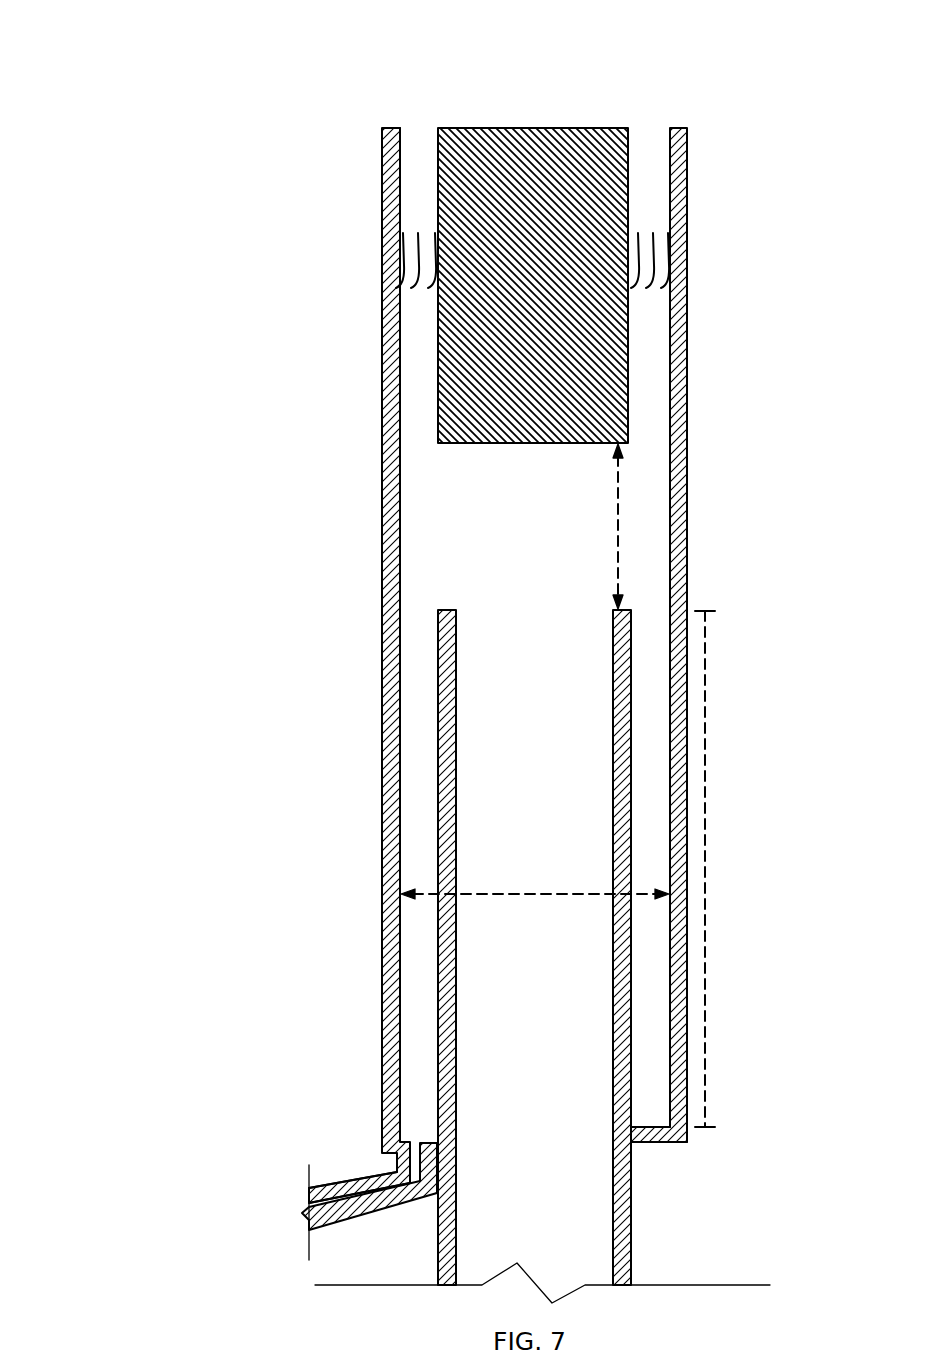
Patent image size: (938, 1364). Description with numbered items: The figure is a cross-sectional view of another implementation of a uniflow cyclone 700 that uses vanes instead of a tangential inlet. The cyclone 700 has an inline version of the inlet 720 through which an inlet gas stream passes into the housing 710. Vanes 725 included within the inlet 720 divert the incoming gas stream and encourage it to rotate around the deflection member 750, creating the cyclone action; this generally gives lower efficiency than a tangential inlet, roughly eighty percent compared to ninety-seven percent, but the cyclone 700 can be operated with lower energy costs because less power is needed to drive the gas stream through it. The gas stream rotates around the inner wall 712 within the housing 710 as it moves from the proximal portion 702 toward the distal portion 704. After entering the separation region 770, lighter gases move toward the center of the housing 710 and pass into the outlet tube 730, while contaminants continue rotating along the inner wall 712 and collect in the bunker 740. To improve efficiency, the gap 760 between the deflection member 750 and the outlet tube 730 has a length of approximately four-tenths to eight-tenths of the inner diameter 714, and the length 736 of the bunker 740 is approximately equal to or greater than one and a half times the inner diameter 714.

The cyclone 700 is at (92, 57).
The proximal portion 702 is at (747, 110).
The distal portion 704 is at (712, 1155).
The housing 710 is at (382, 518).
The inner wall 712 is at (392, 215).
The inner diameter 714 is at (560, 893).
The inlet 720 is at (420, 118).
The vanes 725 is at (413, 262).
The outlet tube 730 is at (613, 720).
The length 736 is at (705, 835).
The bunker 740 is at (418, 1083).
The deflection member 750 is at (628, 197).
The gap 760 is at (618, 545).
The separation region 770 is at (418, 340).